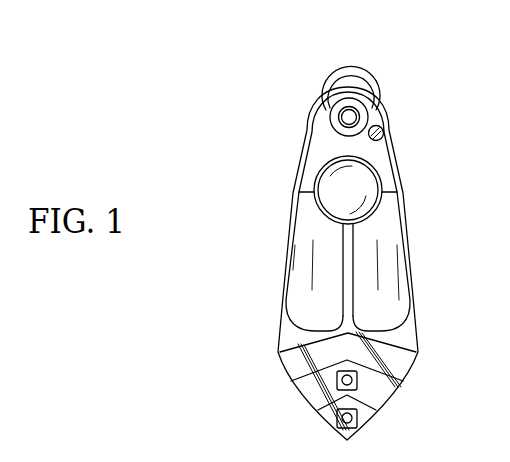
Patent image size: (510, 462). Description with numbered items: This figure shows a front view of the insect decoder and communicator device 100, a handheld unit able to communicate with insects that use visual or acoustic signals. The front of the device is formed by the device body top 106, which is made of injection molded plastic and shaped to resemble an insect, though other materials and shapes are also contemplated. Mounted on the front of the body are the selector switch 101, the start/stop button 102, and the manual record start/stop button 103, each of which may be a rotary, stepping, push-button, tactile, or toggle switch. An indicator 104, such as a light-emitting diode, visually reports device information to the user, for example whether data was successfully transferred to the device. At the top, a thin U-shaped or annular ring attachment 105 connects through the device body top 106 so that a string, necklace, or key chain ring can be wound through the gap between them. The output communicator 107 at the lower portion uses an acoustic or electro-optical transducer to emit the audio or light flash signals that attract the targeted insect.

The insect decoder and communicator device 100 is at (232, 89).
The selector switch 101 is at (290, 193).
The start/stop button 102 is at (362, 184).
The manual record start/stop button 103 is at (355, 117).
The indicator 104 is at (384, 131).
The ring attachment 105 is at (362, 72).
The device body top 106 is at (310, 290).
The output communicator 107 is at (367, 390).